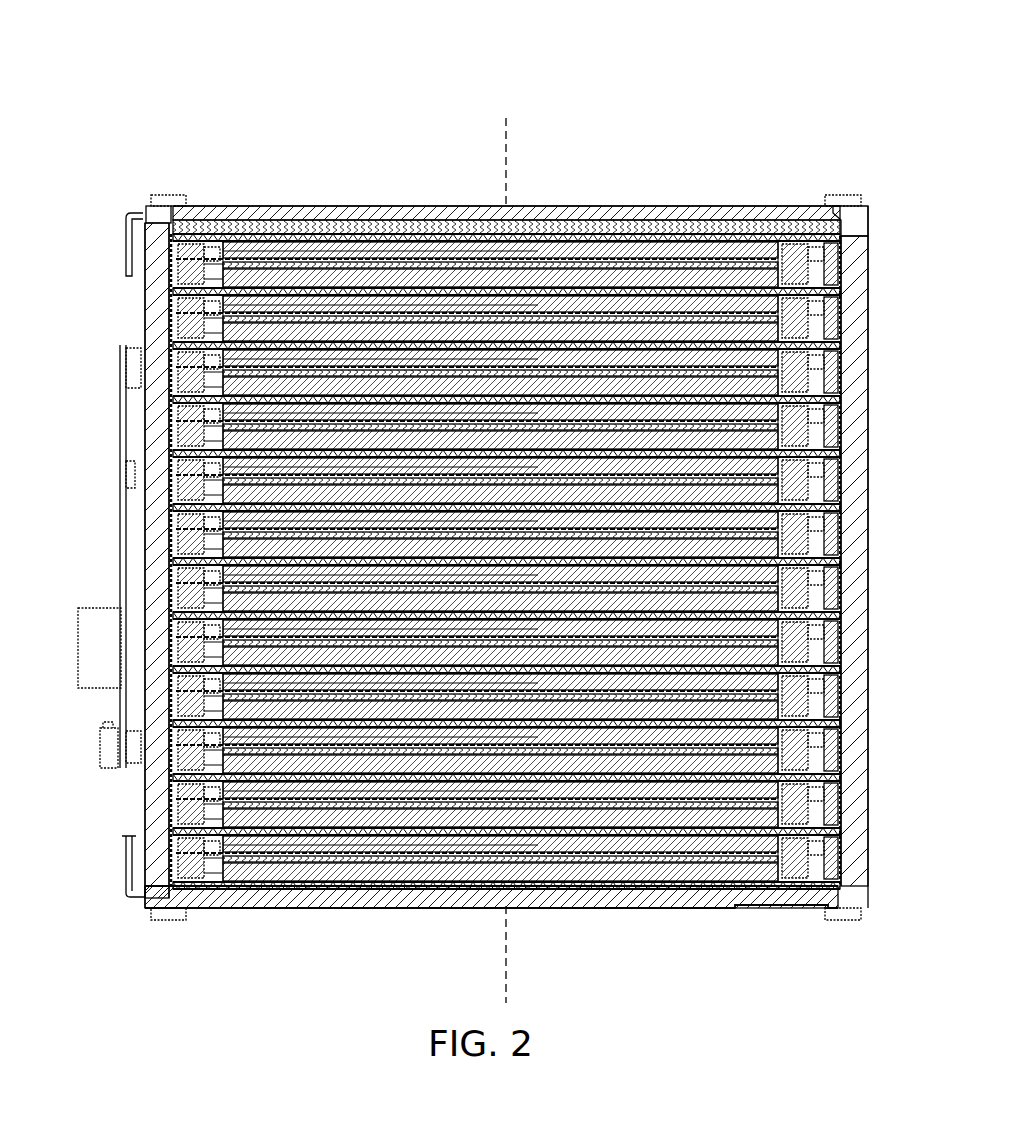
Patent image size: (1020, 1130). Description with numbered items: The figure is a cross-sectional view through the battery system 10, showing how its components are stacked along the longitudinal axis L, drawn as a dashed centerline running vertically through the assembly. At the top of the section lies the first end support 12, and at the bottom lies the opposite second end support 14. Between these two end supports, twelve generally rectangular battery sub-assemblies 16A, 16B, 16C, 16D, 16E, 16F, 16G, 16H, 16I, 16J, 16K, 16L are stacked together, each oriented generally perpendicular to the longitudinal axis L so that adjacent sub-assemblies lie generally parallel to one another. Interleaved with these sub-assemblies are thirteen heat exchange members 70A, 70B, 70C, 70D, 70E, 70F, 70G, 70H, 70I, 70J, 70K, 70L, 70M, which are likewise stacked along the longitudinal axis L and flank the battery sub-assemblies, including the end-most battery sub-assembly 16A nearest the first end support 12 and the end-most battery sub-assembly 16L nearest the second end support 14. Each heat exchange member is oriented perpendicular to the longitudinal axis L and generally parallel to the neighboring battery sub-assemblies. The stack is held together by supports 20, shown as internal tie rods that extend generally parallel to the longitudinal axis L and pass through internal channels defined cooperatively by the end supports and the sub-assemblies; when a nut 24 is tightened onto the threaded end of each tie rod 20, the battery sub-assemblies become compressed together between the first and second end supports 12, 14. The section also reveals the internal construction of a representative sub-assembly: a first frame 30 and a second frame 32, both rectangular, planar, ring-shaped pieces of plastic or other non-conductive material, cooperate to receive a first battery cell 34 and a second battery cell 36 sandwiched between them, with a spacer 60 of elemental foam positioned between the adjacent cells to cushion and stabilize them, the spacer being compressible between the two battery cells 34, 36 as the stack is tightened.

The battery system 10 is at (775, 92).
The first end support 12 is at (648, 210).
The second end support 14 is at (668, 883).
The support 20 is at (845, 192).
The nut 24 is at (848, 212).
The first frame 30 is at (178, 233).
The second frame 32 is at (203, 256).
The first battery cell 34 is at (375, 245).
The second battery cell 36 is at (487, 270).
The spacer 60 is at (425, 262).
The longitudinal axis L is at (500, 150).
The battery sub-assembly 16A is at (213, 258).
The battery sub-assembly 16B is at (213, 312).
The battery sub-assembly 16C is at (213, 366).
The battery sub-assembly 16D is at (213, 420).
The battery sub-assembly 16E is at (213, 474).
The battery sub-assembly 16F is at (213, 528).
The battery sub-assembly 16G is at (213, 582).
The battery sub-assembly 16H is at (213, 636).
The battery sub-assembly 16I is at (213, 690).
The battery sub-assembly 16J is at (213, 744).
The battery sub-assembly 16K is at (213, 798).
The battery sub-assembly 16L is at (213, 852).
The heat exchange member 70A is at (823, 232).
The heat exchange member 70B is at (823, 286).
The heat exchange member 70C is at (823, 340).
The heat exchange member 70D is at (823, 394).
The heat exchange member 70E is at (823, 448).
The heat exchange member 70F is at (823, 502).
The heat exchange member 70G is at (823, 556).
The heat exchange member 70H is at (823, 610).
The heat exchange member 70I is at (823, 664).
The heat exchange member 70J is at (823, 718).
The heat exchange member 70K is at (823, 772).
The heat exchange member 70L is at (823, 826).
The heat exchange member 70M is at (823, 880).